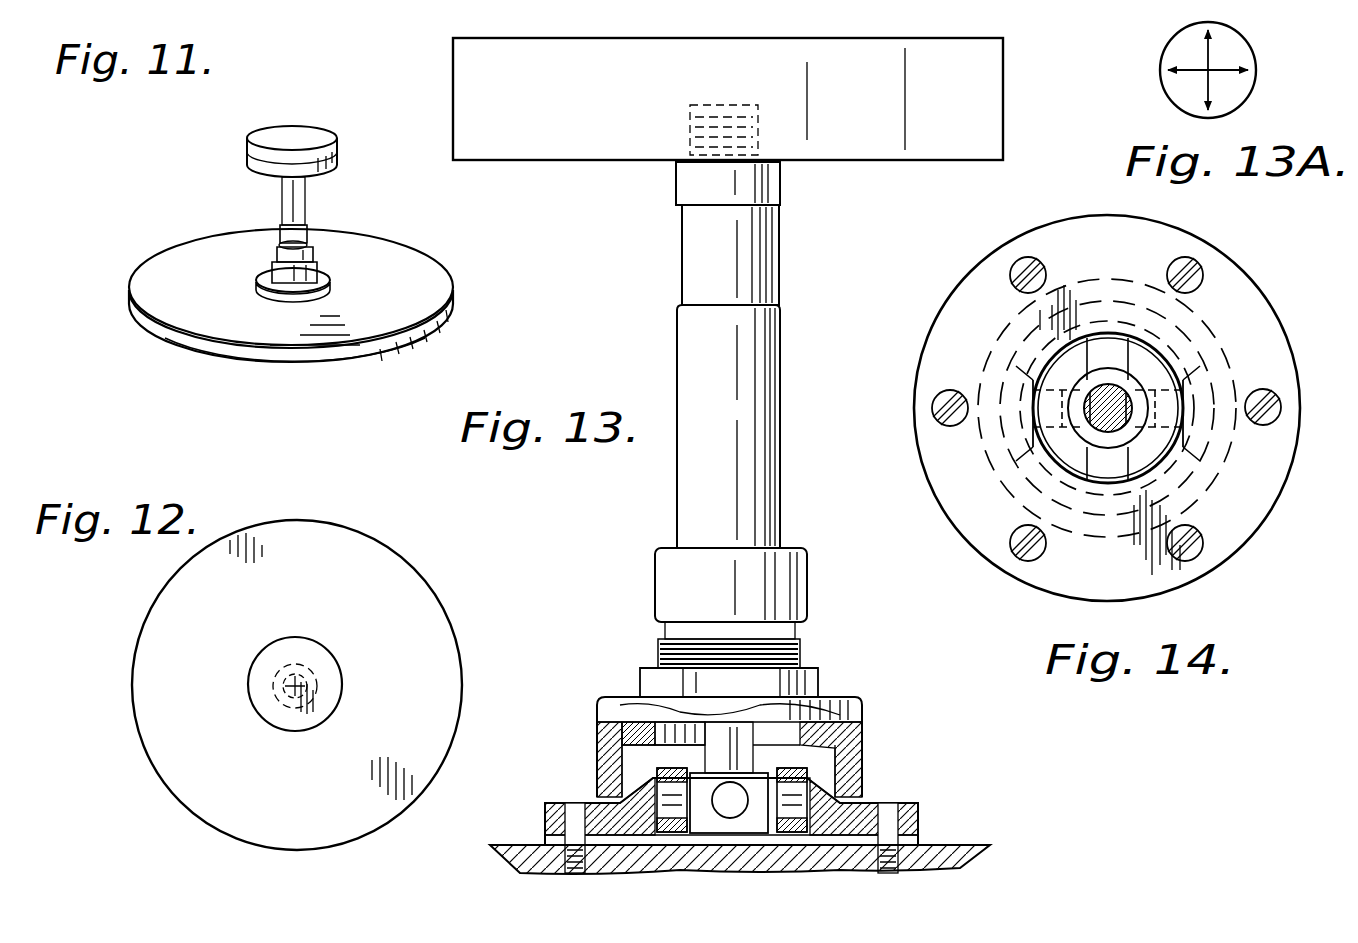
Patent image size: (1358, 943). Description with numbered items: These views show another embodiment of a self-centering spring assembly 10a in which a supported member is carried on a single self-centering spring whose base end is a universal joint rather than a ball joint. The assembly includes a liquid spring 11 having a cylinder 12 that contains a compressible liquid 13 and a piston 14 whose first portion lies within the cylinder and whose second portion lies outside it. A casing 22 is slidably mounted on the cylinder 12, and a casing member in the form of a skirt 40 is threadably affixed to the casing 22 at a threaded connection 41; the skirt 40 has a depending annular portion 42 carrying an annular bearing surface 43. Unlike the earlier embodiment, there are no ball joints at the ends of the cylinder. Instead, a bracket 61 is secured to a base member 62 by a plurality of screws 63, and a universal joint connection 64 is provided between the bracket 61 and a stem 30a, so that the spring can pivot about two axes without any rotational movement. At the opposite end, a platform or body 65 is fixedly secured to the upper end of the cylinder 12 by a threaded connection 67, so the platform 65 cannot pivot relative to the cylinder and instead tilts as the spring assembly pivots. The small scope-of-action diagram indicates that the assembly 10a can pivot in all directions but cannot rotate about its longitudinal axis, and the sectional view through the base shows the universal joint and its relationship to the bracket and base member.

In FIG. 11, the self-centering spring assembly 10a is at (278, 204).
In FIG. 12, the self-centering spring assembly 10a is at (283, 700).
In FIG. 13, the self-centering spring assembly 10a is at (828, 300).
In FIG. 13, the liquid spring 11 is at (765, 245).
In FIG. 11, the cylinder 12 is at (450, 193).
In FIG. 13, the cylinder 12 is at (683, 262).
In FIG. 11, the compressible liquid 13 is at (295, 112).
In FIG. 13, the piston 14 is at (555, 795).
In FIG. 13, the casing 22 is at (780, 430).
In FIG. 13, the stem 30a is at (655, 695).
In FIG. 13, the skirt 40 is at (862, 705).
In FIG. 13, the threaded connection 41 is at (800, 672).
In FIG. 13, the depending annular portion 42 is at (770, 778).
In FIG. 13, the annular bearing surface 43 is at (600, 783).
In FIG. 13, the bracket 61 is at (910, 825).
In FIG. 14, the bracket 61 is at (1298, 390).
In FIG. 11, the base member 62 is at (155, 268).
In FIG. 12, the base member 62 is at (182, 805).
In FIG. 13, the base member 62 is at (985, 855).
In FIG. 13, the screws 63 is at (575, 805).
In FIG. 14, the screws 63 is at (1200, 268).
In FIG. 13, the universal joint connection 64 is at (810, 745).
In FIG. 14, the universal joint connection 64 is at (1085, 378).
In FIG. 11, the platform 65 is at (250, 165).
In FIG. 12, the platform 65 is at (325, 655).
In FIG. 13, the platform 65 is at (1003, 70).
In FIG. 13, the threaded connection 67 is at (690, 128).